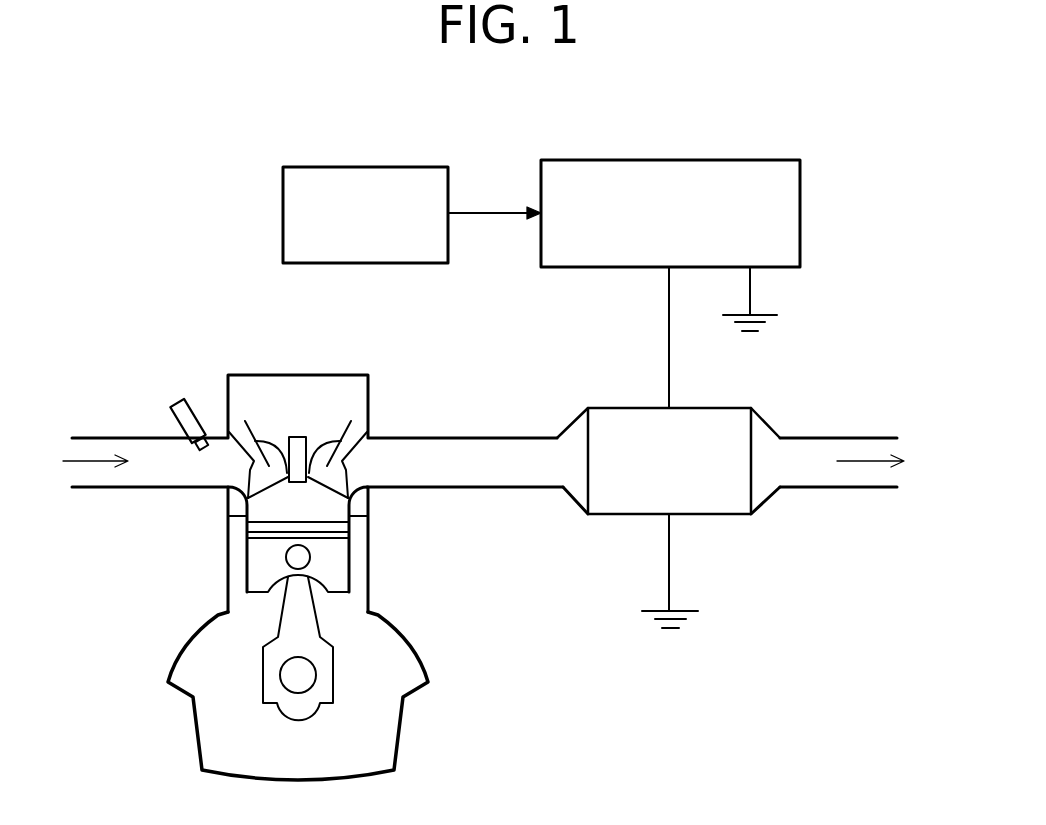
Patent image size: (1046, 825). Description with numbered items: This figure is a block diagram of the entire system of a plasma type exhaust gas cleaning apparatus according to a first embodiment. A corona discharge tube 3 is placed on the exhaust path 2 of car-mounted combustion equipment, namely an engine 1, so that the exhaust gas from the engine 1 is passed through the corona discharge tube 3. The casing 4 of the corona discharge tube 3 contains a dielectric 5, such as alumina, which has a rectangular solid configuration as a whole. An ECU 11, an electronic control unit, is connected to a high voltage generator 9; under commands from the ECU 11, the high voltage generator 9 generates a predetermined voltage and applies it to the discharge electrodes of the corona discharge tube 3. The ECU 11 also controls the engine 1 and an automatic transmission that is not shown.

The engine 1 is at (215, 348).
The exhaust path 2 is at (462, 437).
The corona discharge tube 3 is at (609, 406).
The casing 4 is at (767, 427).
The dielectric 5 is at (720, 488).
The high voltage generator 9 is at (620, 160).
The ECU 11 is at (316, 166).